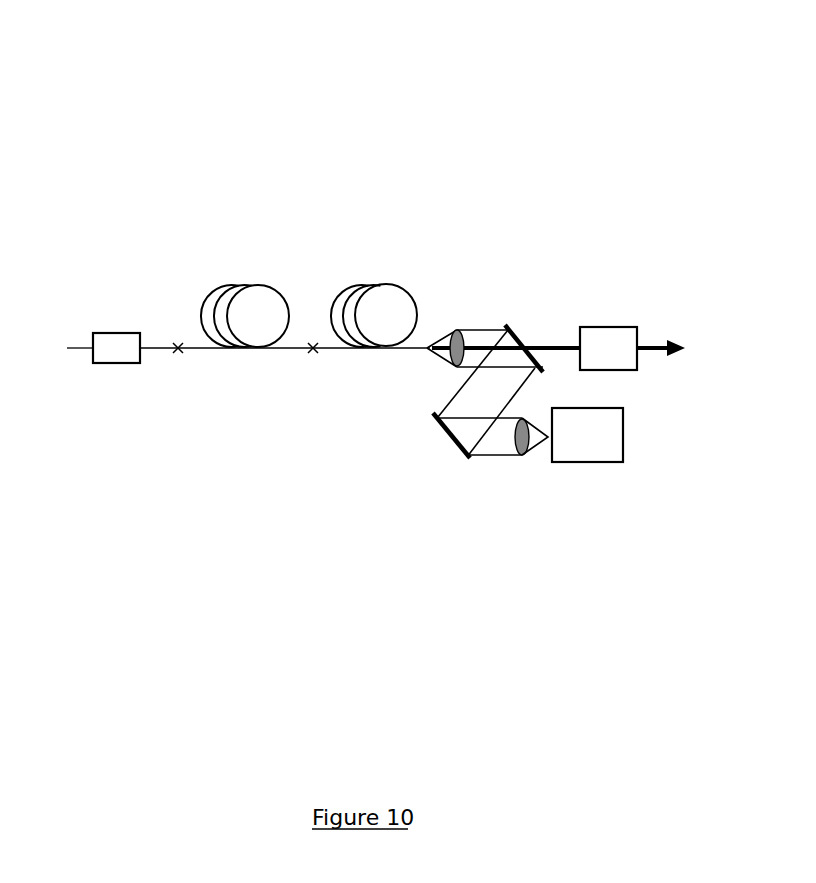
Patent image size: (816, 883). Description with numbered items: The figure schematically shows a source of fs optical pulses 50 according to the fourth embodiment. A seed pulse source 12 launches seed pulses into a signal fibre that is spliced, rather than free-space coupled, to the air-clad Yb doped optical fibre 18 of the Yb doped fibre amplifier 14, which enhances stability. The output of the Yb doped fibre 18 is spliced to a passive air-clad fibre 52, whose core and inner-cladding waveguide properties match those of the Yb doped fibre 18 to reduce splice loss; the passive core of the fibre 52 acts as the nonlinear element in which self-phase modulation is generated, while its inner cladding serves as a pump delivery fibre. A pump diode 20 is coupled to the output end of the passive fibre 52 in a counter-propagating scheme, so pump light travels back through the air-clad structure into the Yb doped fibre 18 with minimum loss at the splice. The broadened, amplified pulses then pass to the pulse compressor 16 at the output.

The source of fs optical pulses 50 is at (418, 75).
The seed pulse source 12 is at (113, 363).
The air-clad Yb doped optical fibre 18 is at (258, 285).
The passive air-clad fibre 52 is at (407, 290).
The Yb doped fibre amplifier 14 is at (314, 452).
The pulse compressor 16 is at (625, 335).
The pump diode 20 is at (580, 450).